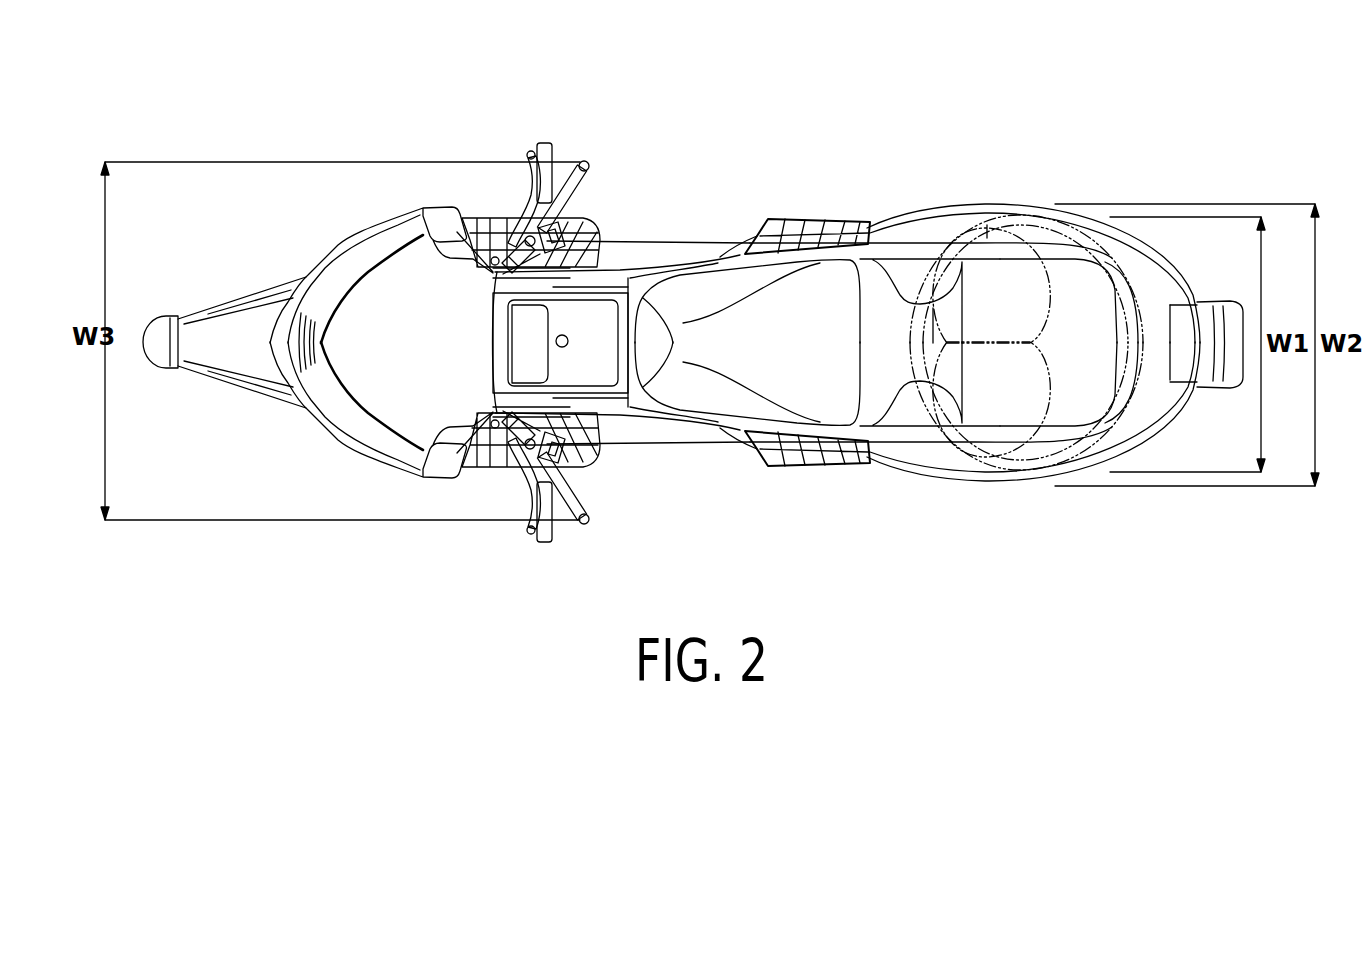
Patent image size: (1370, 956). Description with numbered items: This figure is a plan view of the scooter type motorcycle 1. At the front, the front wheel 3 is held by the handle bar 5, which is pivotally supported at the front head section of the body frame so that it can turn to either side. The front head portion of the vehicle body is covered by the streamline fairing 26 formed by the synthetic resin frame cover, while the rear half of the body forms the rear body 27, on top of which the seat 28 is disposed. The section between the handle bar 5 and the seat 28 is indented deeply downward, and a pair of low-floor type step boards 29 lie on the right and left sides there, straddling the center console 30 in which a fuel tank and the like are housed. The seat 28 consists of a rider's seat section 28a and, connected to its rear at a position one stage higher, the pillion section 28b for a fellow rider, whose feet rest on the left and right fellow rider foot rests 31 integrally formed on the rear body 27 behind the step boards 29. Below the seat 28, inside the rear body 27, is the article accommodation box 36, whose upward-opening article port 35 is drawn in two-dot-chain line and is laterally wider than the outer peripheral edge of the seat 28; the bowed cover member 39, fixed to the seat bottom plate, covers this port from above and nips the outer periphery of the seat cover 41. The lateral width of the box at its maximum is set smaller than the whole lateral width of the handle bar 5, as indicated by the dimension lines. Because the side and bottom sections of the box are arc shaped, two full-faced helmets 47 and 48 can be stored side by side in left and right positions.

The scooter type motorcycle 1 is at (703, 106).
The front wheel 3 is at (173, 316).
The handle bar 5 is at (585, 192).
The streamline fairing 26 is at (327, 250).
The rear body 27 is at (1185, 277).
The seat 28 is at (888, 125).
The rider's seat section 28a is at (818, 290).
The pillion section 28b is at (963, 265).
The step board 29 is at (583, 235).
The center console 30 is at (607, 377).
The fellow rider foot rest 31 is at (782, 222).
The article port 35 is at (913, 458).
The article accommodation box 36 is at (1067, 460).
The cover member 39 is at (1037, 210).
The seat cover 41 is at (1108, 267).
The full-faced helmet 47 is at (982, 470).
The full-faced helmet 48 is at (980, 212).